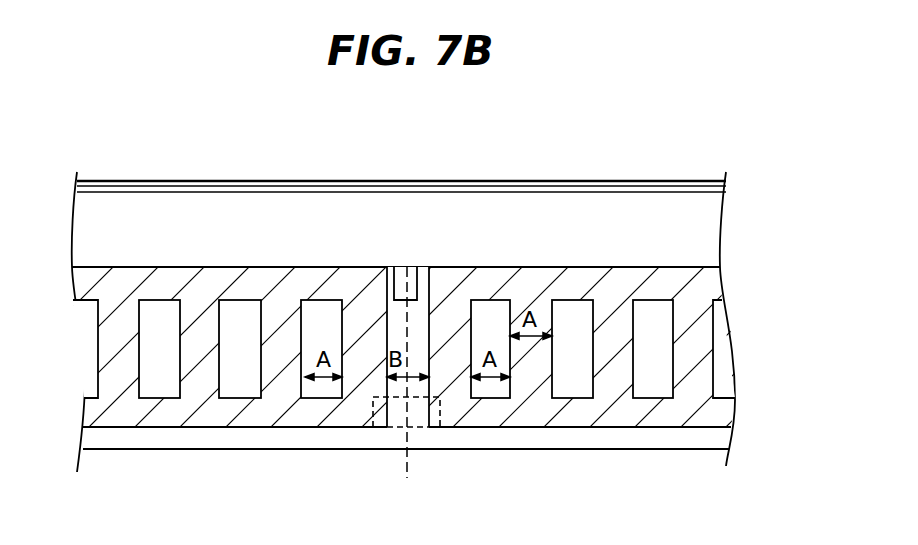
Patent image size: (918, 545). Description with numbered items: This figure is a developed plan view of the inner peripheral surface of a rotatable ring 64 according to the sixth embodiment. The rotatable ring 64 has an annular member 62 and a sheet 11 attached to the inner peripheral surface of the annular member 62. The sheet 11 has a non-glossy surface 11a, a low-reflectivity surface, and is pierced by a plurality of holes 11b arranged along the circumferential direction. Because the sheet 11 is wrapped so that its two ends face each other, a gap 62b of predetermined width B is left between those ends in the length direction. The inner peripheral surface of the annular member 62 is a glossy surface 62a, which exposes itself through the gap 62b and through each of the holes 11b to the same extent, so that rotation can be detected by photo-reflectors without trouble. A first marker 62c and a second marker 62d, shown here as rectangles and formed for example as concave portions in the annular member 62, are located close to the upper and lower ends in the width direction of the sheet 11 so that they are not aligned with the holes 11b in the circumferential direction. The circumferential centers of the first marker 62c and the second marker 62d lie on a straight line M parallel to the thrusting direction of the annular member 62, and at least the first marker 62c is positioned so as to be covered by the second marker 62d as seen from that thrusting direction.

The rotatable ring 64 is at (431, 137).
The annular member 62 is at (623, 210).
The sheet 11 is at (513, 267).
The glossy surface 62a is at (413, 320).
The gap 62b is at (427, 260).
The first marker 62c is at (402, 289).
The second marker 62d is at (385, 407).
The non-glossy surface 11a is at (277, 387).
The holes 11b is at (140, 380).
The straight line M is at (408, 389).